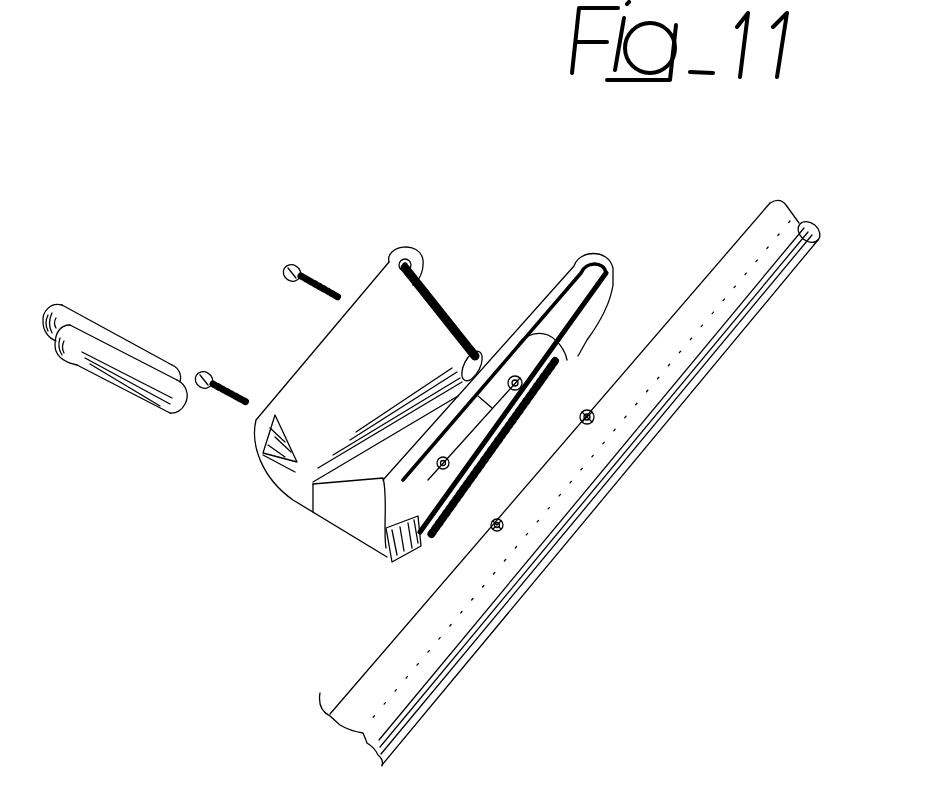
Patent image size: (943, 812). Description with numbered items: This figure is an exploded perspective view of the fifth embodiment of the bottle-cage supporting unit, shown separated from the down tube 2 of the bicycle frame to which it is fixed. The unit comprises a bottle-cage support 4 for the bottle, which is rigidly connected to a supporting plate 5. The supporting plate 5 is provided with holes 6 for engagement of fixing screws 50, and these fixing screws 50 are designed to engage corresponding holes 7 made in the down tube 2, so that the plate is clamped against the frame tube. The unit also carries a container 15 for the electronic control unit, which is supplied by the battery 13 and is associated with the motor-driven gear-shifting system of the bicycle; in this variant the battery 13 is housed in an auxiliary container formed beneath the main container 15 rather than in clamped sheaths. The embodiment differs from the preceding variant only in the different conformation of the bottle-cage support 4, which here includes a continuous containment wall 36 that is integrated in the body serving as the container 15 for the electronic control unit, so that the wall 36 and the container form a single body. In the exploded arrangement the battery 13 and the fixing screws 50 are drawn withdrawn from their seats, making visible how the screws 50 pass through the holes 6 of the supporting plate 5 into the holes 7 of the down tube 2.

The down tube 2 is at (645, 414).
The bottle-cage support 4 is at (353, 272).
The supporting plate 5 is at (463, 355).
The holes 6 is at (575, 345).
The holes 7 is at (497, 512).
The battery 13 is at (137, 362).
The container 15 is at (352, 497).
The continuous containment wall 36 is at (420, 335).
The fixing screws 50 is at (200, 370).